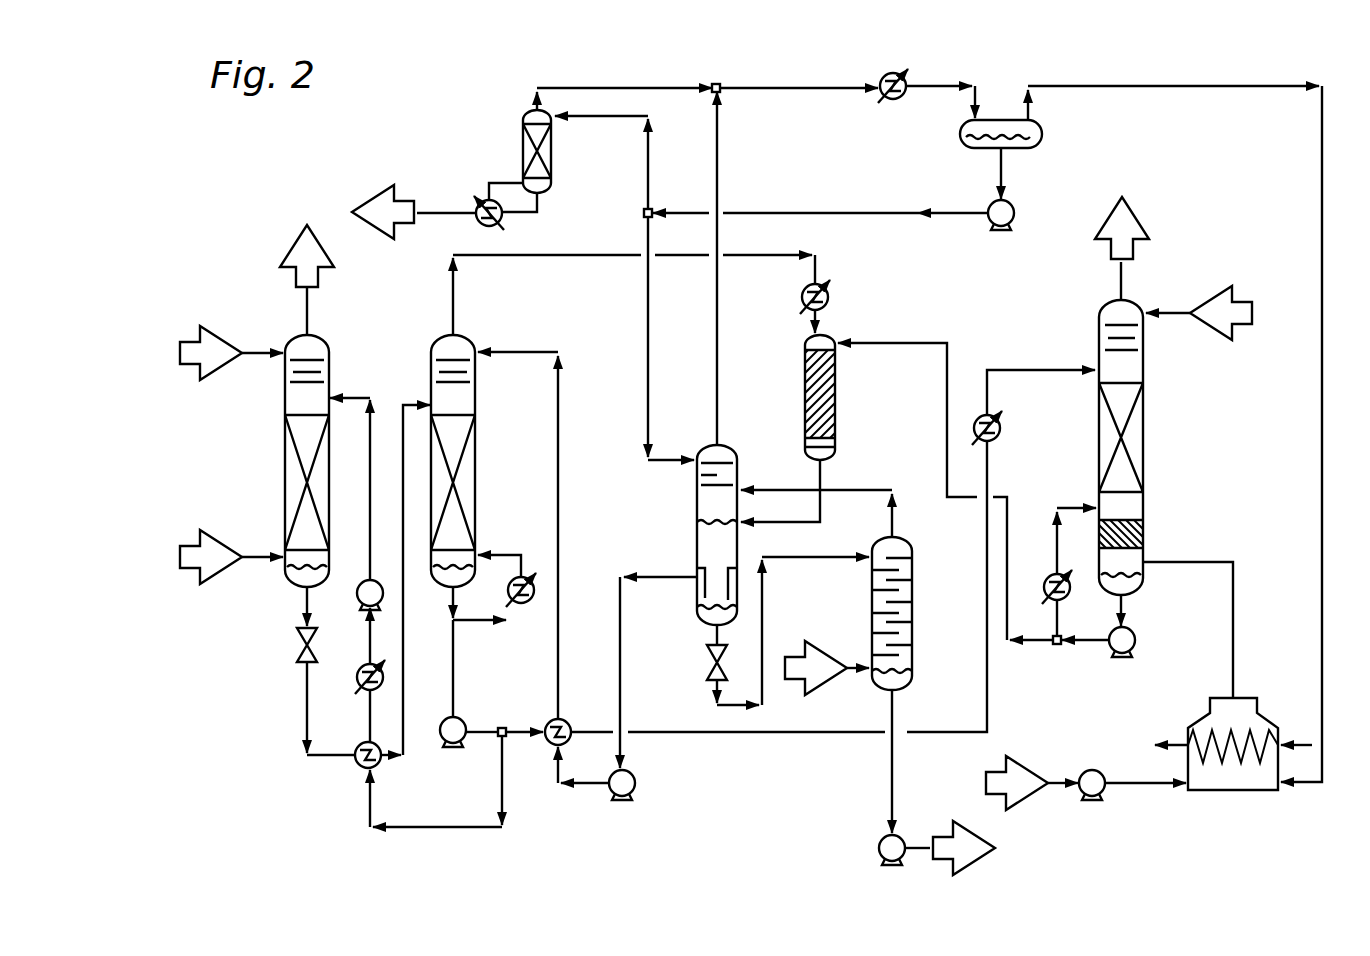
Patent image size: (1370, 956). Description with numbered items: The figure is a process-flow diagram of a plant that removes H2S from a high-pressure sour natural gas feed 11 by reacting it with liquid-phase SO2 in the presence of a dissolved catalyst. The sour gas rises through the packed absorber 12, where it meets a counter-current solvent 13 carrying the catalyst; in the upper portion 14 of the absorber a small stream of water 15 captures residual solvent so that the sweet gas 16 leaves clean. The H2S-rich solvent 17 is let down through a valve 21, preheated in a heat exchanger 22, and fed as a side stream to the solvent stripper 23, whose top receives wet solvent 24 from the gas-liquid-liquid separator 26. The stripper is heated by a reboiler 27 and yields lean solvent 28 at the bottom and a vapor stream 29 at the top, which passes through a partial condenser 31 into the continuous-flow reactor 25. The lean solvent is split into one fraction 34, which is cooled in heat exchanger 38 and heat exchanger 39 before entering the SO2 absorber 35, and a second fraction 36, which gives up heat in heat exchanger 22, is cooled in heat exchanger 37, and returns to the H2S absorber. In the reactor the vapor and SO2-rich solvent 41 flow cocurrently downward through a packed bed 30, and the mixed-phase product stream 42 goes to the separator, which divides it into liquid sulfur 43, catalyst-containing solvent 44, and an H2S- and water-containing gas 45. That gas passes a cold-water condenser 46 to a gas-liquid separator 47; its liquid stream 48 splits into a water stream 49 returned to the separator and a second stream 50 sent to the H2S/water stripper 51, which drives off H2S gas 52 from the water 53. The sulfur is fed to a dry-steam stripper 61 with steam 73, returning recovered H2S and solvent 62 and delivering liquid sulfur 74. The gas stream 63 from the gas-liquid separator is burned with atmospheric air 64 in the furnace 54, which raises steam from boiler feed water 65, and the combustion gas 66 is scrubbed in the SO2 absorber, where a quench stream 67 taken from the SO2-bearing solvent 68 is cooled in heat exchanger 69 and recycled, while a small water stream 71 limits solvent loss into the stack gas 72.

The sour natural gas feed 11 is at (226, 541).
The absorber 12 is at (283, 483).
The solvent 13 is at (345, 404).
The portion of the absorber above the packed bed 14 is at (345, 398).
The stream of water 15 is at (229, 338).
The sweet gas 16 is at (291, 252).
The H2S-rich solvent 17 is at (302, 608).
The valve 21 is at (303, 661).
The heat exchanger 22 is at (358, 769).
The solvent stripper 23 is at (478, 466).
The wet solvent 24 is at (513, 350).
The continuous-flow reactor 25 is at (840, 405).
The gas-liquid-liquid separator 26 is at (692, 506).
The reboiler 27 is at (521, 575).
The lean solvent 28 is at (455, 672).
The vapor stream 29 is at (449, 317).
The packed bed 30 is at (805, 406).
The partial condenser 31 is at (833, 292).
The lean solvent fraction 34 is at (508, 724).
The SO2 absorber 35 is at (1145, 441).
The lean solvent fraction 36 is at (500, 775).
The heat exchanger 37 is at (358, 692).
The heat exchanger 38 is at (566, 720).
The heat exchanger 39 is at (1000, 426).
The SO2-rich solvent 41 is at (895, 343).
The mixed-phase product stream 42 is at (843, 487).
The liquid sulfur 43 is at (708, 647).
The solvent 44 is at (668, 571).
The H2S- and water-containing gas 45 is at (726, 346).
The cold-water condenser 46 is at (890, 101).
The gas-liquid separator 47 is at (1042, 128).
The liquid stream 48 is at (1003, 181).
The returned water stream 49 is at (647, 320).
The second stream 50 is at (650, 169).
The H2S/water stripper 51 is at (522, 131).
The H2S gas 52 is at (587, 83).
The water 53 is at (377, 196).
The furnace 54 is at (1195, 716).
The dry-steam stripper 61 is at (915, 611).
The H2S and solvent 62 is at (895, 524).
The gas stream 63 is at (1122, 84).
The atmospheric air 64 is at (1030, 770).
The boiler feed water 65 is at (1305, 744).
The combustion gas 66 is at (1235, 613).
The quench stream 67 is at (1052, 516).
The SO2-bearing solvent 68 is at (1130, 613).
The heat exchanger 69 is at (1048, 581).
The stream of water 71 is at (1215, 291).
The stack gas 72 is at (1135, 213).
The steam 73 is at (826, 643).
The liquid sulfur 74 is at (978, 859).